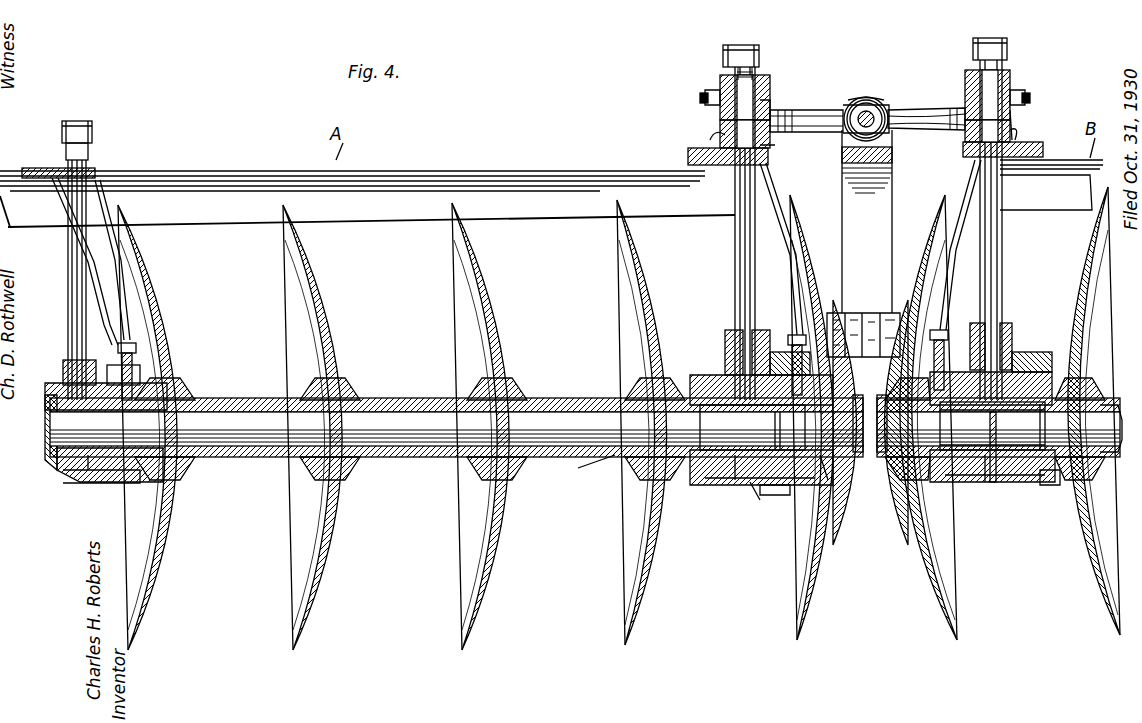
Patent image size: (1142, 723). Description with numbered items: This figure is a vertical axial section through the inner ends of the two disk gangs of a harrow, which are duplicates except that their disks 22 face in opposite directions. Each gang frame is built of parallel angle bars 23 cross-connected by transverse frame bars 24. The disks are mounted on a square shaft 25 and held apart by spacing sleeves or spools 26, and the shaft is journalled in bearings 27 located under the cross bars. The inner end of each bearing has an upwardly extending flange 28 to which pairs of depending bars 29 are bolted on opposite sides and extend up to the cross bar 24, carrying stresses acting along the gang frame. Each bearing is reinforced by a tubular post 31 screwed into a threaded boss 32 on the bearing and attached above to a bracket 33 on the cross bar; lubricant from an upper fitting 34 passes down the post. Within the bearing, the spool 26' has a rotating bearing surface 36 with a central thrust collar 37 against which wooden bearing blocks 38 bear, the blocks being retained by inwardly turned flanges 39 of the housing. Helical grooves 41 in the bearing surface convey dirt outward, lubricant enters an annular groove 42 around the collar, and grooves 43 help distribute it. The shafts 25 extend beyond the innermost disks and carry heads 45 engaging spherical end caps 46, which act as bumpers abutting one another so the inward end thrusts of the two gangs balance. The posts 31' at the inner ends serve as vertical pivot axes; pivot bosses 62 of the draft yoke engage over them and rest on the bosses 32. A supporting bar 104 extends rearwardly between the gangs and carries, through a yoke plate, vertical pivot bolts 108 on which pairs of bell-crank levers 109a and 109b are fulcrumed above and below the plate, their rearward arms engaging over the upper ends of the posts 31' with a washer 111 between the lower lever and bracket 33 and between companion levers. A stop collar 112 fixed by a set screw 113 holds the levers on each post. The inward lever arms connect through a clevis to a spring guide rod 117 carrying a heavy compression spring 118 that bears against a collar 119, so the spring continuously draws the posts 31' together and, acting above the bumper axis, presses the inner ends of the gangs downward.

The disks 22 is at (140, 635).
The angle bars 23 is at (420, 173).
The transverse frame bars 24 is at (90, 170).
The square shaft 25 is at (435, 412).
The spacing sleeves or spools 26 is at (585, 462).
The spacing sleeve 26' is at (601, 488).
The bearings 27 is at (104, 483).
The flange 28 is at (140, 355).
The depending bars 29 is at (125, 292).
The post 31 is at (58, 271).
The pivot post 31' is at (874, 230).
The threaded boss 32 is at (63, 365).
The bracket 33 is at (720, 140).
The lubricant fitting 34 is at (93, 130).
The rotating bearing surface 36 is at (52, 455).
The thrust collar 37 is at (88, 480).
The bearing blocks 38 is at (72, 483).
The inwardly turned flanges 39 is at (700, 485).
The helical grooves 41 is at (778, 450).
The annular groove 42 is at (752, 485).
The grooves 43 is at (872, 424).
The heads 45 is at (853, 408).
The spherical end caps 46 is at (880, 480).
The pivot bosses 62 is at (770, 360).
The supporting bar 104 is at (892, 212).
The vertical pivot bolts 108 is at (762, 92).
The bell-crank levers 109a is at (795, 110).
The bell-crank levers 109b is at (935, 103).
The washer 111 is at (768, 140).
The stop collar 112 is at (720, 90).
The set screw 113 is at (700, 98).
The spring guide rod 117 is at (860, 100).
The compression spring 118 is at (878, 102).
The collar 119 is at (905, 80).